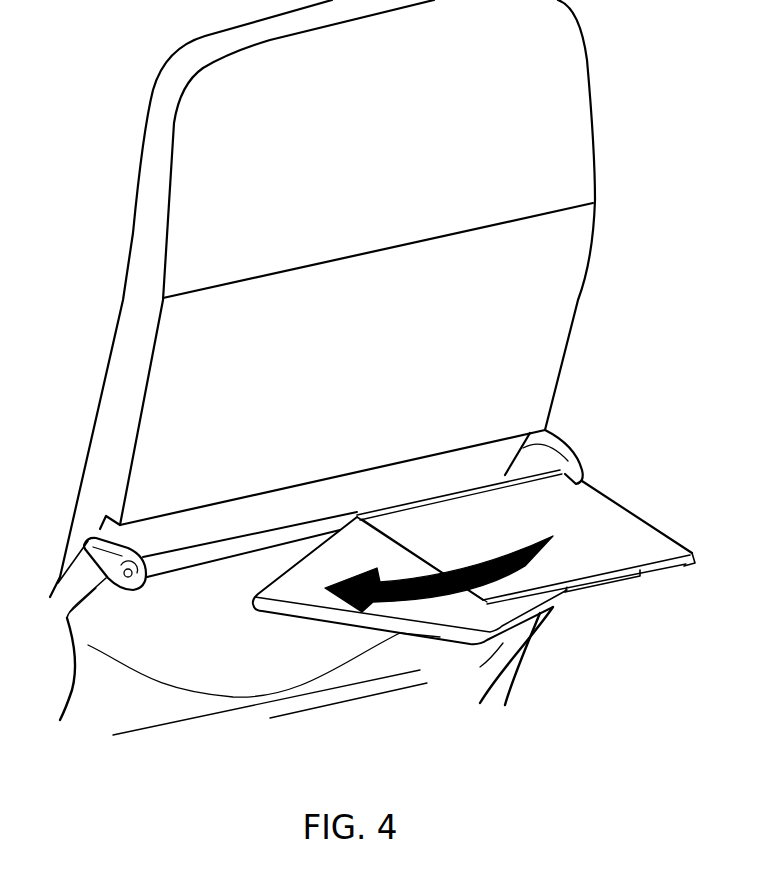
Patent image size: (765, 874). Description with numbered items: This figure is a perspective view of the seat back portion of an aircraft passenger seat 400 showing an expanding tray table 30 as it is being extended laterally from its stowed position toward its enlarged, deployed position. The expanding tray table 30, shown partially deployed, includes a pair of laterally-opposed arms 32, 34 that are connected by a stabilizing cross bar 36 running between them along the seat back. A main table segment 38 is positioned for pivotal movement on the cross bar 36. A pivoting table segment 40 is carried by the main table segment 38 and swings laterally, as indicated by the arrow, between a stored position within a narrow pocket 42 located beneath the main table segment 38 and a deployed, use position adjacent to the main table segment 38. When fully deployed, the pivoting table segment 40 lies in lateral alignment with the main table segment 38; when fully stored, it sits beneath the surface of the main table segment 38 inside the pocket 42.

The seat assembly 400 is at (100, 117).
The expanding tray table 30 is at (453, 604).
The arm 32 is at (85, 563).
The arm 34 is at (573, 457).
The stabilizing cross bar 36 is at (177, 563).
The main table segment 38 is at (587, 565).
The pivoting table segment 40 is at (317, 593).
The pocket 42 is at (590, 586).